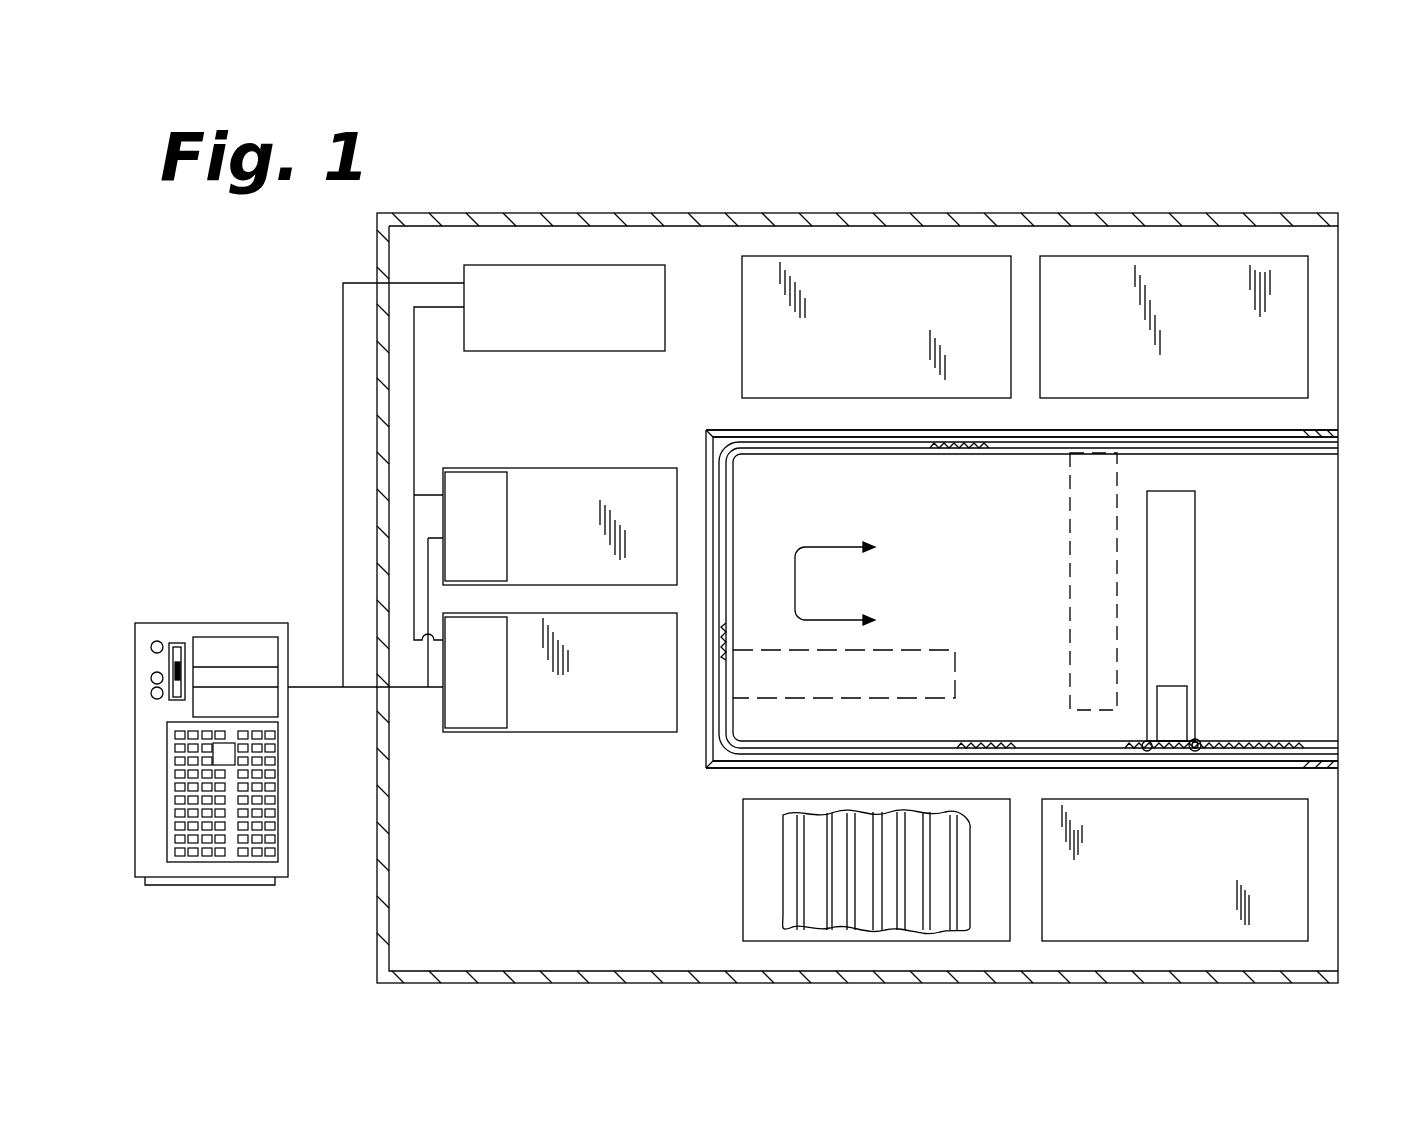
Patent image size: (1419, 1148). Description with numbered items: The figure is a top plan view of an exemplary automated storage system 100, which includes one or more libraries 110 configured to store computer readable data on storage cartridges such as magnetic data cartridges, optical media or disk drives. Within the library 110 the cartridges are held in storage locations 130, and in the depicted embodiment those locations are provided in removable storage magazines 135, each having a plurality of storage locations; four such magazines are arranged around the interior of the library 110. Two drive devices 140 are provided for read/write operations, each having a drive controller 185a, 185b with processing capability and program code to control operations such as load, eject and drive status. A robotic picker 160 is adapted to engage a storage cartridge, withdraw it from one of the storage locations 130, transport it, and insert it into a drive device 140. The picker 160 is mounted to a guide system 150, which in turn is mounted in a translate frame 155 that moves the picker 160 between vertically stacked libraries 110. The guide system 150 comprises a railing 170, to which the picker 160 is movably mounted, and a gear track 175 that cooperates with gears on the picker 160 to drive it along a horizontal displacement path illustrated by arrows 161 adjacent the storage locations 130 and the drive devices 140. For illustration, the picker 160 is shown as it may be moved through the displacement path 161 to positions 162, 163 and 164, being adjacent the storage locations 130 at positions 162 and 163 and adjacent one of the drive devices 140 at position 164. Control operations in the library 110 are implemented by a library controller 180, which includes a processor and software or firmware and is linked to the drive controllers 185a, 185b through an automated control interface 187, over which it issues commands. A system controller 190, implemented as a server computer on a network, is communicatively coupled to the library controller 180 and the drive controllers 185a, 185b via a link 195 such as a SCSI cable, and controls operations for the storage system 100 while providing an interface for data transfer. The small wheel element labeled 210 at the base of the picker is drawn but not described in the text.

The storage system 100 is at (1268, 191).
The library 110 is at (489, 213).
The storage locations 130 is at (885, 903).
The removable storage magazines 135 is at (1060, 256).
The drive device 140 is at (551, 467).
The guide system 150 is at (1309, 739).
The translate frame 155 is at (1285, 428).
The picker 160 is at (1204, 613).
The displacement path arrows 161 is at (795, 583).
The picker position 162 is at (1197, 567).
The picker position 163 is at (1070, 513).
The picker position 164 is at (955, 650).
The railing 170 is at (735, 503).
The gear track 175 is at (998, 745).
The library controller 180 is at (532, 352).
The drive controller 185a is at (508, 525).
The drive controller 185b is at (508, 672).
The automated control interface 187 is at (414, 418).
The system controller 190 is at (212, 623).
The link 195 is at (315, 688).
The drive wheel 210 is at (1200, 740).